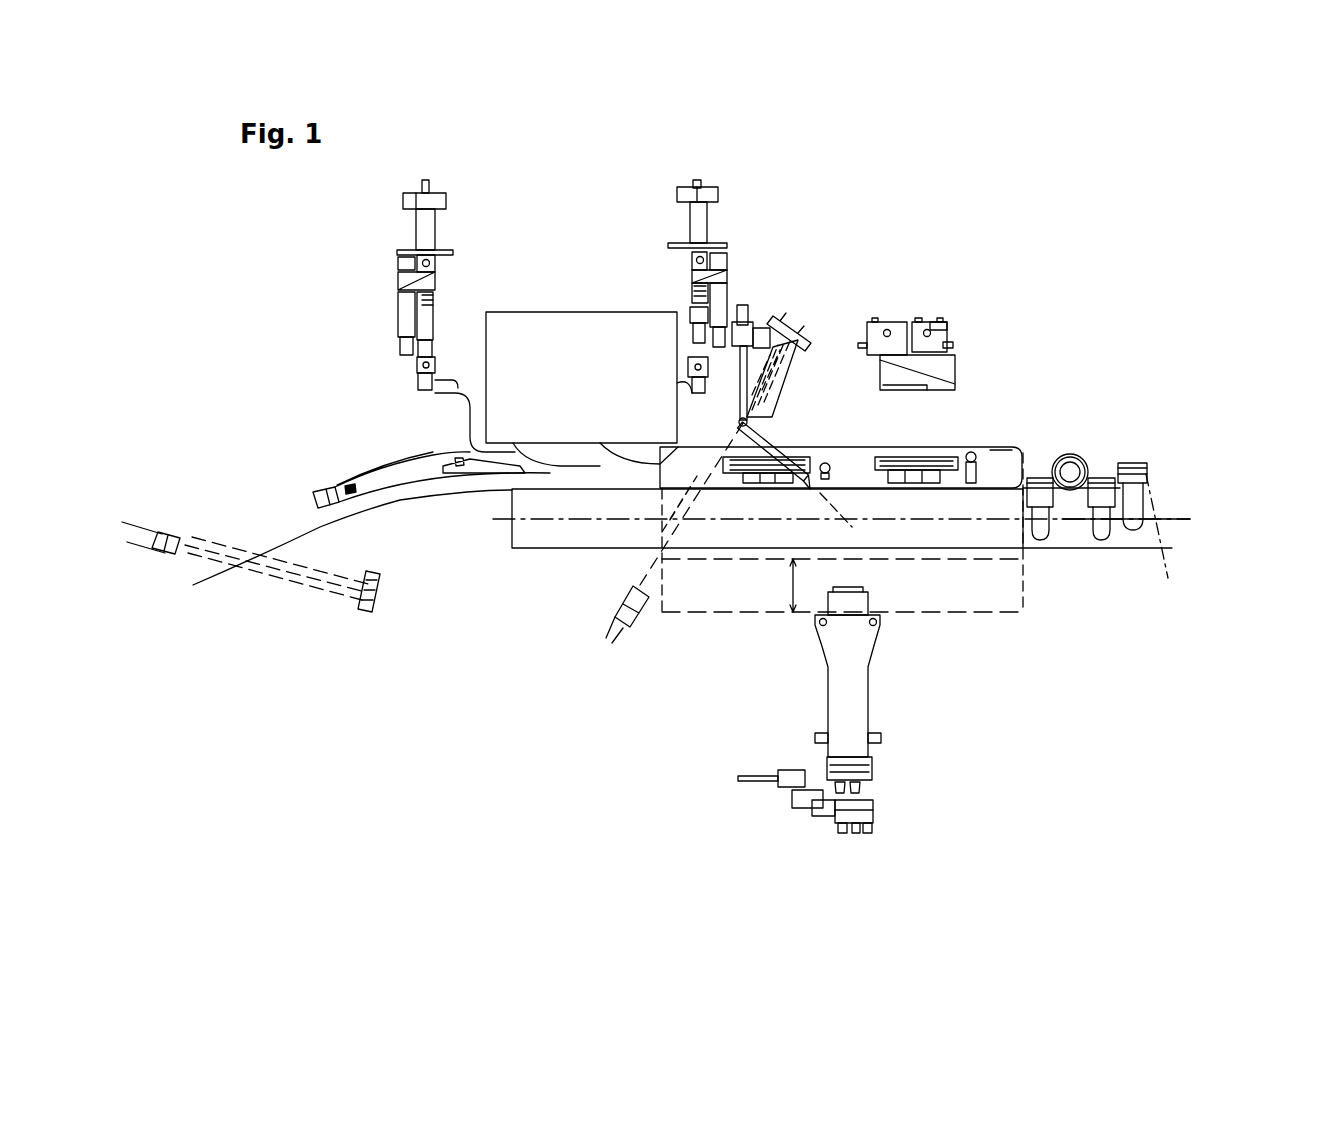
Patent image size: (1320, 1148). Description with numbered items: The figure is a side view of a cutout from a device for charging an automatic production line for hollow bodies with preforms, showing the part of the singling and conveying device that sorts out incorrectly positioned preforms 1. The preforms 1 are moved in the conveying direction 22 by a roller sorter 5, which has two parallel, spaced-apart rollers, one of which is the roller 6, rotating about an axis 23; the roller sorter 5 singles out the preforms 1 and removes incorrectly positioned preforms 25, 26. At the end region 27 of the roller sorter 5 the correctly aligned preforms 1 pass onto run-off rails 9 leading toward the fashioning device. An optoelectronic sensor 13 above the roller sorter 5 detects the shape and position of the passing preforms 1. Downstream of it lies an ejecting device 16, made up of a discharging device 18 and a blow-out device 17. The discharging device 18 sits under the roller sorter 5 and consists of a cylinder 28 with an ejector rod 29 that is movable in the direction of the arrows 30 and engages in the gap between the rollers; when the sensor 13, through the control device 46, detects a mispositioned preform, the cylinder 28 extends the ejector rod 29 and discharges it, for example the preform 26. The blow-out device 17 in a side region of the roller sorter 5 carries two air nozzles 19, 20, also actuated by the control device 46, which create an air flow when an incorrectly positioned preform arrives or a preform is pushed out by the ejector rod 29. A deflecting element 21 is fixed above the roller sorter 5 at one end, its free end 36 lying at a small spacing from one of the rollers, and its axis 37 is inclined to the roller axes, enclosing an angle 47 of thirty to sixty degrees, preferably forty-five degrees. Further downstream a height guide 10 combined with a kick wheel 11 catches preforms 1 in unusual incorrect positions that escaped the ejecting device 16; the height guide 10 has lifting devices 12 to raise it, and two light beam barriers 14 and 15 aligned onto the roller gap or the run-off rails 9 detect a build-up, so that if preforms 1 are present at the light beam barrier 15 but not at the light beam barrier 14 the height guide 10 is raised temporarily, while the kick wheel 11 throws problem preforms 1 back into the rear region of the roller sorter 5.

The preform 1 is at (1100, 527).
The roller sorter 5 is at (1040, 528).
The roller 6 is at (1147, 537).
The run-off rails 9 is at (402, 503).
The height guide 10 is at (413, 473).
The kick wheel 11 is at (583, 340).
The lifting devices 12 is at (690, 245).
The optoelectronic sensor 13 is at (917, 362).
The light beam barrier 14 is at (167, 528).
The light beam barrier 15 is at (630, 633).
The ejecting device 16 is at (783, 812).
The blow-out device 17 is at (1000, 450).
The discharging device 18 is at (827, 690).
The air nozzle 19 is at (923, 462).
The air nozzle 20 is at (806, 470).
The deflecting element 21 is at (740, 317).
The conveying direction 22 is at (1148, 428).
The axis 23 is at (1186, 519).
The incorrectly positioned preform 25 is at (1130, 467).
The incorrectly positioned preform 26 is at (1078, 453).
The end region 27 is at (525, 535).
The cylinder 28 is at (853, 660).
The ejector rod 29 is at (860, 598).
The arrows 30 is at (793, 588).
The free end 36 is at (818, 350).
The axis 37 is at (793, 463).
The control device 46 is at (937, 318).
The angle 47 is at (810, 504).